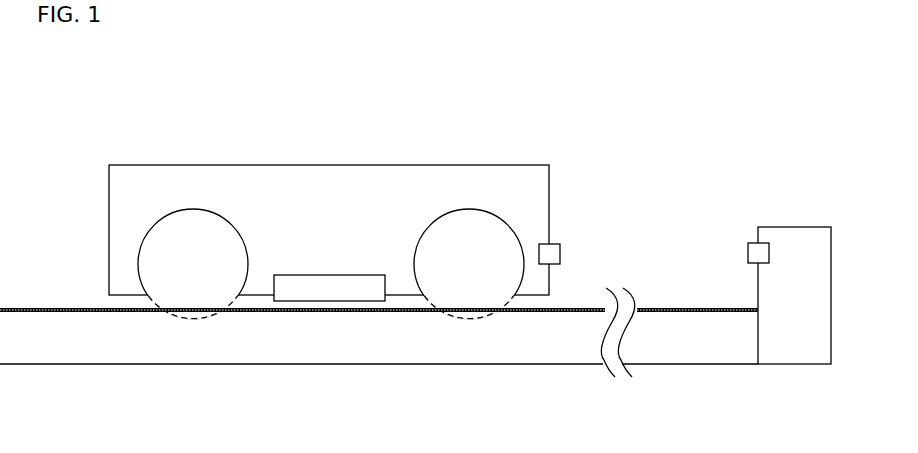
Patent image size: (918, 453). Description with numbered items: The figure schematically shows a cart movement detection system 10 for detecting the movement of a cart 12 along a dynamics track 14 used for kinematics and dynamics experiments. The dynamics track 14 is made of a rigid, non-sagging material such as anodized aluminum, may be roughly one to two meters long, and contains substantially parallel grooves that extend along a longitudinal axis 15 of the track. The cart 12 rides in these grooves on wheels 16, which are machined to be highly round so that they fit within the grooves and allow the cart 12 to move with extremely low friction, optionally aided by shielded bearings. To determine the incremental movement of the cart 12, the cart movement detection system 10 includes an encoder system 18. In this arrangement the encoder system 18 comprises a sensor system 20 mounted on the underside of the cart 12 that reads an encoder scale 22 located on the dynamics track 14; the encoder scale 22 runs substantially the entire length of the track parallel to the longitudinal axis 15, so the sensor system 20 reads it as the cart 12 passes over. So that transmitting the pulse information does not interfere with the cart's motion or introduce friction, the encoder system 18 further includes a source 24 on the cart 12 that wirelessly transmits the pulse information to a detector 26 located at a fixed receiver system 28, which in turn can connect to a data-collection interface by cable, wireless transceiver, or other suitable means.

The cart movement detection system 10 is at (425, 51).
The cart 12 is at (203, 165).
The dynamics track 14 is at (379, 332).
The longitudinal axis 15 is at (822, 388).
The wheels 16 is at (331, 264).
The encoder system 18 is at (602, 126).
The sensor system 20 is at (329, 289).
The encoder scale 22 is at (15, 310).
The source 24 is at (552, 244).
The detector 26 is at (748, 246).
The receiver system 28 is at (794, 295).